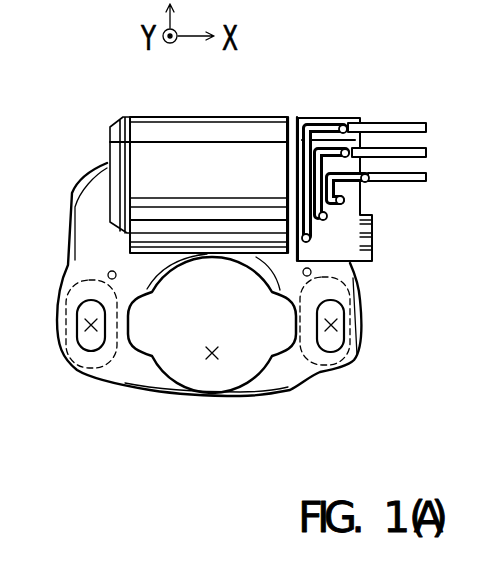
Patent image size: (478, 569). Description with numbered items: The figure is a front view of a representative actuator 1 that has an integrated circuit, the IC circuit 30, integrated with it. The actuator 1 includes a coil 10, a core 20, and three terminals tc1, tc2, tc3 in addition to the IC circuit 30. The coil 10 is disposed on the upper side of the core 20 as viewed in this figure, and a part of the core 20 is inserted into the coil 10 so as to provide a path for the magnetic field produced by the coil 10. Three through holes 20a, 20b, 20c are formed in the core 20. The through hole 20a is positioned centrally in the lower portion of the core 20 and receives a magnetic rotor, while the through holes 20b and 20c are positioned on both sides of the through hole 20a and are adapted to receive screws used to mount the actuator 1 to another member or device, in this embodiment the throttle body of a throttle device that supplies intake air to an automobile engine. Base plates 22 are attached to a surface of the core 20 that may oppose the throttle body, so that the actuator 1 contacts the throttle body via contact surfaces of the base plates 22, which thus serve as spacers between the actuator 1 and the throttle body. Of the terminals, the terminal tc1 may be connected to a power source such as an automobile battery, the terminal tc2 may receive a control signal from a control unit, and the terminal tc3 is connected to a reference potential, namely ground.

The actuator 1 is at (321, 61).
The coil 10 is at (212, 155).
The core 20 is at (289, 373).
The through hole 20a is at (207, 372).
The through hole 20b is at (86, 347).
The through hole 20c is at (330, 350).
The base plate 22 is at (83, 265).
The IC circuit 30 is at (388, 170).
The terminal tc1 is at (448, 94).
The terminal tc2 is at (436, 142).
The terminal tc3 is at (433, 196).